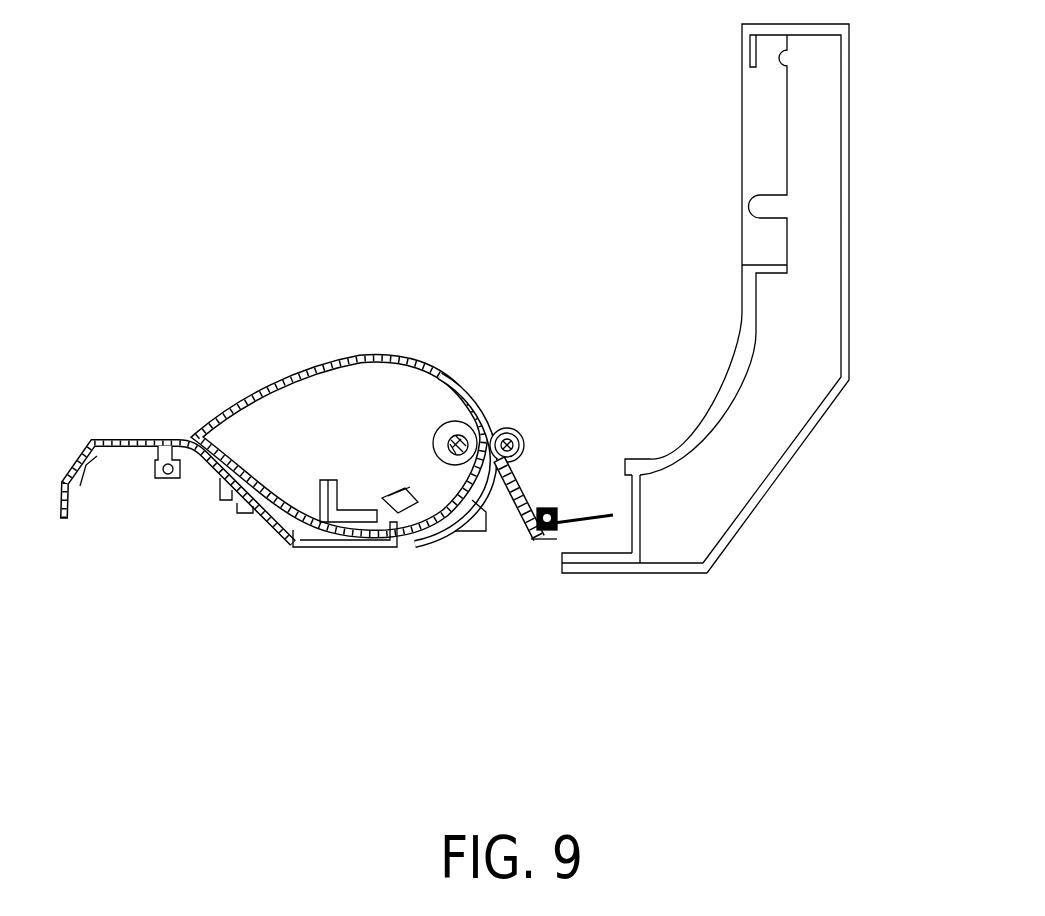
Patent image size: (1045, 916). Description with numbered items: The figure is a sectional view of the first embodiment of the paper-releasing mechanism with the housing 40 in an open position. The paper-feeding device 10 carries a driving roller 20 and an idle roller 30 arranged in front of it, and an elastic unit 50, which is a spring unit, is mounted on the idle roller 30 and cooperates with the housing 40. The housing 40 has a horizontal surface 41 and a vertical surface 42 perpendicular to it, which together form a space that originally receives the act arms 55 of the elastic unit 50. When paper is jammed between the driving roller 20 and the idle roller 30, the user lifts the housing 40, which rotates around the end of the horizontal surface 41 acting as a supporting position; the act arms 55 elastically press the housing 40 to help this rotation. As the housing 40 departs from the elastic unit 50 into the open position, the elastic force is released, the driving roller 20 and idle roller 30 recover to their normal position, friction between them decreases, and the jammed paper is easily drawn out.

The paper-feeding device 10 is at (358, 358).
The driving roller 20 is at (450, 421).
The idle roller 30 is at (516, 428).
The housing 40 is at (823, 420).
The horizontal surface 41 is at (601, 566).
The vertical surface 42 is at (636, 527).
The elastic unit 50 is at (522, 508).
The act arm 55 is at (605, 513).